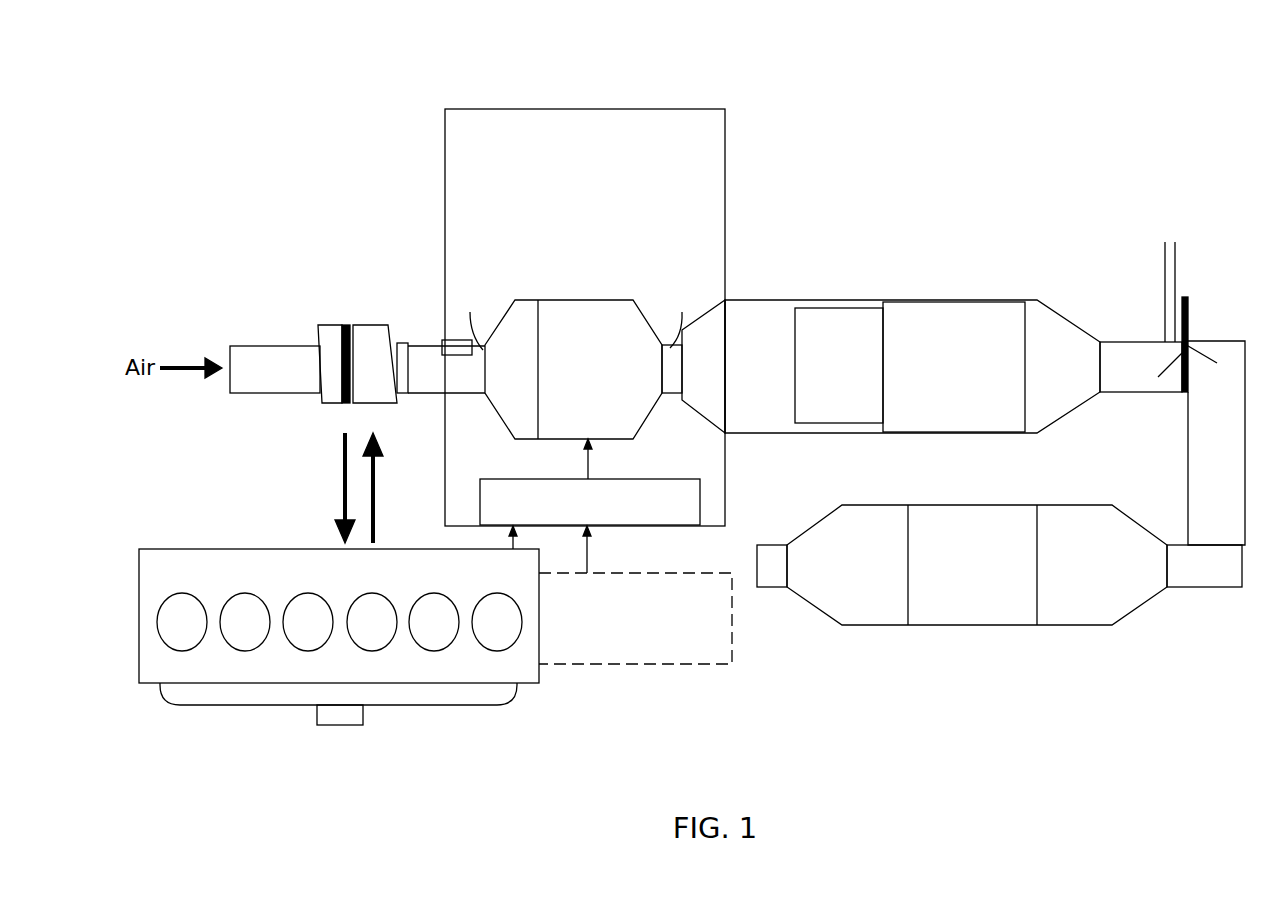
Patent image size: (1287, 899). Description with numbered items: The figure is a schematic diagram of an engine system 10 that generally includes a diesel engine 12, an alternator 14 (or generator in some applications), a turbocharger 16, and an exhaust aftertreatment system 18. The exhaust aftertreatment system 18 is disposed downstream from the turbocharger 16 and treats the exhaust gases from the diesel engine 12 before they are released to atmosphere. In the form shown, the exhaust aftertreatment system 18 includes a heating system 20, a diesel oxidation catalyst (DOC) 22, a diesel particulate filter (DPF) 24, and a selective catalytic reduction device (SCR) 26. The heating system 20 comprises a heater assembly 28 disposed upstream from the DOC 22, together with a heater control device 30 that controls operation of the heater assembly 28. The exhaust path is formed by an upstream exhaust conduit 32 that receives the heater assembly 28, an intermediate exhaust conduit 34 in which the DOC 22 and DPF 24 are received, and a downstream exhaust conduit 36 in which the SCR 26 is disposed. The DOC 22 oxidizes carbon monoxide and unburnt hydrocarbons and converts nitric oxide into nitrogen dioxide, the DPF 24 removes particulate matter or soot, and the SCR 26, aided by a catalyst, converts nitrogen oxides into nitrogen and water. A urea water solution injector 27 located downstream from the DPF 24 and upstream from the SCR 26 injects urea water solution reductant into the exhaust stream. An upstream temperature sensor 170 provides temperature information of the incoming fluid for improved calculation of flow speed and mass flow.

The engine system 10 is at (1090, 82).
The diesel engine 12 is at (139, 593).
The alternator 14 is at (678, 664).
The turbocharger 16 is at (330, 323).
The exhaust aftertreatment system 18 is at (950, 160).
The heating system 20 is at (592, 109).
The diesel oxidation catalyst (DOC) 22 is at (817, 313).
The diesel particulate filter (DPF) 24 is at (953, 305).
The selective catalytic reduction device (SCR) 26 is at (967, 625).
The urea water solution injector 27 is at (1175, 273).
The heater assembly 28 is at (626, 308).
The heater control device 30 is at (697, 510).
The upstream exhaust conduit 32 is at (507, 313).
The intermediate exhaust conduit 34 is at (742, 297).
The downstream exhaust conduit 36 is at (1067, 625).
The upstream temperature sensor 170 is at (442, 340).